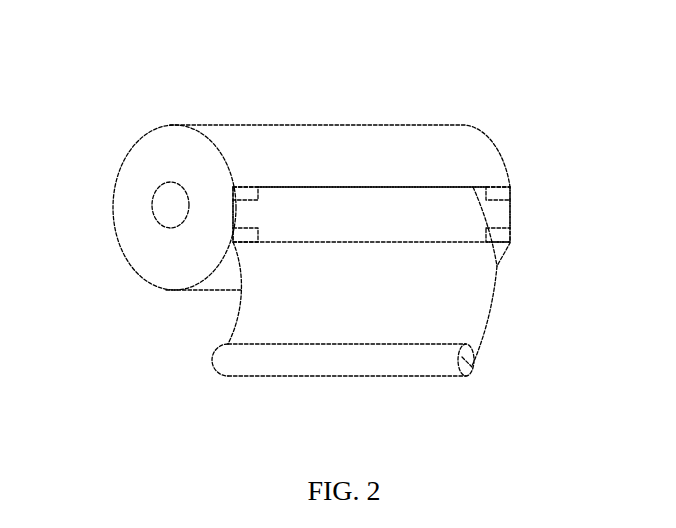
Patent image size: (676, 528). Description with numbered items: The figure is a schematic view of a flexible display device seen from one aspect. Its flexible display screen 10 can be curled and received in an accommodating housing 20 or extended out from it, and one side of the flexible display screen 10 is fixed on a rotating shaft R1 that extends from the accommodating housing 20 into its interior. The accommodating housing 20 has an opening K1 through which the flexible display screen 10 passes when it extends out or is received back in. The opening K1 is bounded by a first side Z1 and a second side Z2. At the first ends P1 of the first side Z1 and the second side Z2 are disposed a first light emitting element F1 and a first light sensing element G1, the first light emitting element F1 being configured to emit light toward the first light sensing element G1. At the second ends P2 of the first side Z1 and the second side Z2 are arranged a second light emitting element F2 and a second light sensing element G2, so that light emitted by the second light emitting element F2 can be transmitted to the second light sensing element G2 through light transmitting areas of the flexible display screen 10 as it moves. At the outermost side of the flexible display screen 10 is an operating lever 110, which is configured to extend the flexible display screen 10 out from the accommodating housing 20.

The flexible display screen 10 is at (467, 316).
The accommodating housing 20 is at (110, 220).
The operating lever 110 is at (473, 373).
The rotating shaft R1 is at (152, 195).
The first ends P1 is at (232, 220).
The second ends P2 is at (512, 210).
The first light emitting element F1 is at (247, 187).
The second light emitting element F2 is at (510, 185).
The first light sensing element G1 is at (239, 245).
The second light sensing element G2 is at (503, 236).
The first side Z1 is at (310, 187).
The second side Z2 is at (310, 242).
The opening K1 is at (356, 191).